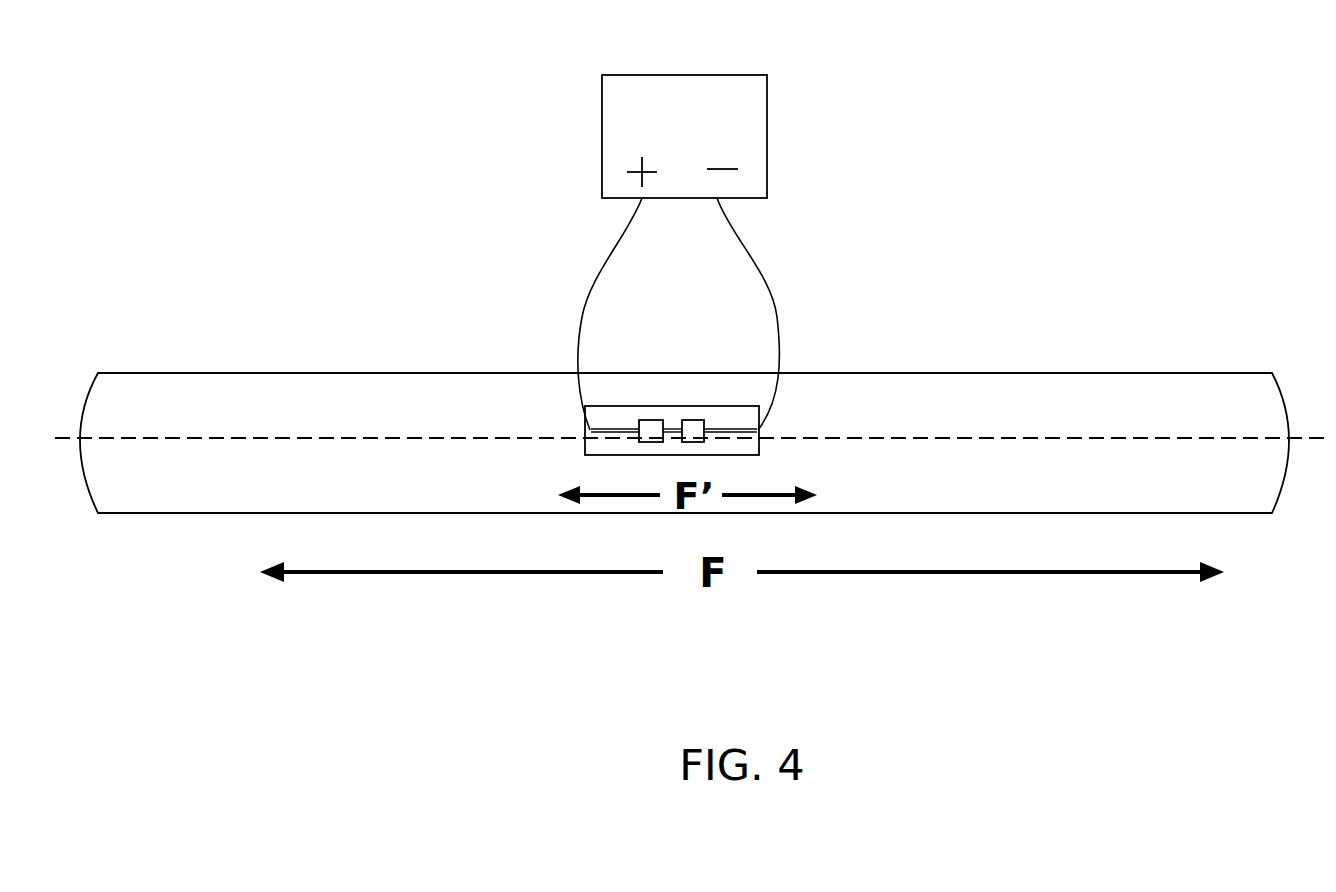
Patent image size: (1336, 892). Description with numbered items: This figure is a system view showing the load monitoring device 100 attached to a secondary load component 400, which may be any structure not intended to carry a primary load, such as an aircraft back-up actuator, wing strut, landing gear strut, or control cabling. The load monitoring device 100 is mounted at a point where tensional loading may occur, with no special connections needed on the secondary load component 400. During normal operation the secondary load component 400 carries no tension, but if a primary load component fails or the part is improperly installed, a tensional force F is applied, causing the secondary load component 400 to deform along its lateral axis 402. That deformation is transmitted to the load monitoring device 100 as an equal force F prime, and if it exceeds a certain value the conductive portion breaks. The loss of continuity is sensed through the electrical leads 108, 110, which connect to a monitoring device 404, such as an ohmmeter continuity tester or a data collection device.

The load monitoring device 100 is at (643, 406).
The electrical lead 108 is at (580, 311).
The electrical lead 110 is at (810, 298).
The secondary load component 400 is at (958, 372).
The lateral axis 402 is at (1297, 442).
The monitoring device 404 is at (767, 98).